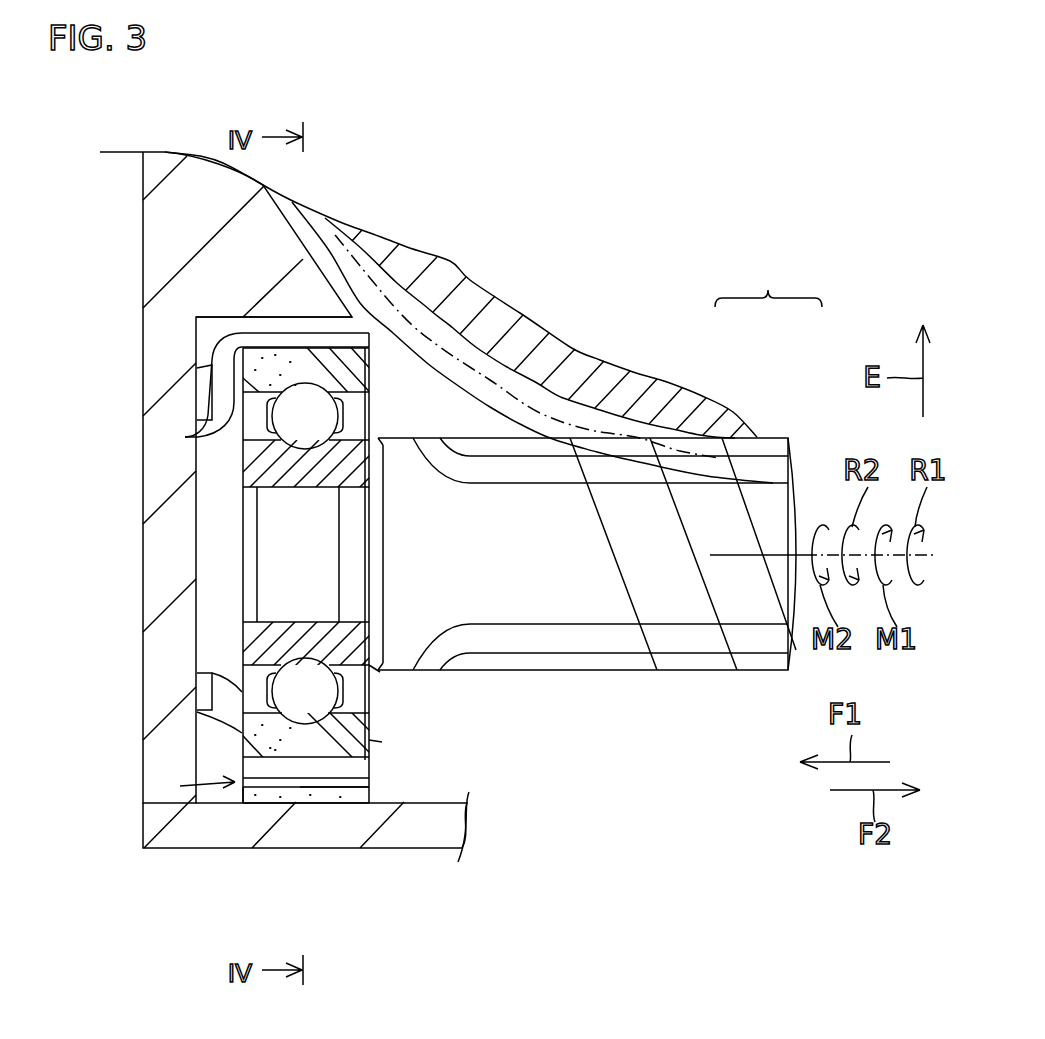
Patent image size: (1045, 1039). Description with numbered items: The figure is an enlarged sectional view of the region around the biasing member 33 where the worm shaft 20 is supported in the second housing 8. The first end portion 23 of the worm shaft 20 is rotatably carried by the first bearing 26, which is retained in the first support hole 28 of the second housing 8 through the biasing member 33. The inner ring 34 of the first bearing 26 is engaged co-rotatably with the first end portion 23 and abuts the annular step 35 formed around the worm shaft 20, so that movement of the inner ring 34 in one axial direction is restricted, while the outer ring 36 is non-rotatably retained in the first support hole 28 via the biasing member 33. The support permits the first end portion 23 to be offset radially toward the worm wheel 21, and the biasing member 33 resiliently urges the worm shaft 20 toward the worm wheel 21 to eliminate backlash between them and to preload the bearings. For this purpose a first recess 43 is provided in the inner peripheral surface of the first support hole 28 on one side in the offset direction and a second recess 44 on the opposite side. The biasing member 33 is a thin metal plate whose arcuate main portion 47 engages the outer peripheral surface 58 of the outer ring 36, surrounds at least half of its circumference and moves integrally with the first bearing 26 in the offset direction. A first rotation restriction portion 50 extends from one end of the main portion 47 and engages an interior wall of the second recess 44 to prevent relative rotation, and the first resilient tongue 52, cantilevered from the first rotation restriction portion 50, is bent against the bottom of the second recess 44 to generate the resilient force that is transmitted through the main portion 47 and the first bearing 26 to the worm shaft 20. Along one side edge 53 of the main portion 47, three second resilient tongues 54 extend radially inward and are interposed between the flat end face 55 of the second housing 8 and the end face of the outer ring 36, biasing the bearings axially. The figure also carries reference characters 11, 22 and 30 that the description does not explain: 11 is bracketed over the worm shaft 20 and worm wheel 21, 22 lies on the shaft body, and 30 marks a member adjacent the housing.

The second housing 8 is at (400, 850).
The rotary shaft unit 11 is at (768, 281).
The worm shaft 20 is at (805, 460).
The worm wheel 21 is at (740, 403).
The rotary shaft 22 is at (600, 672).
The first end portion 23 is at (243, 548).
The first bearing 26 is at (370, 714).
The first support hole 28 is at (327, 790).
The cover plate 30 is at (428, 378).
The biasing member 33 is at (180, 786).
The inner ring 34 is at (242, 622).
The annular step 35 is at (378, 680).
The outer ring 36 is at (382, 742).
The first recess 43 is at (248, 333).
The second recess 44 is at (240, 795).
The main portion 47 is at (303, 318).
The first rotation restriction portion 50 is at (243, 778).
The first resilient tongue 52 is at (292, 805).
The side edge 53 is at (200, 438).
The second resilient tongues 54 is at (205, 385).
The flat end face 55 is at (205, 358).
The outer peripheral surface 58 is at (355, 331).